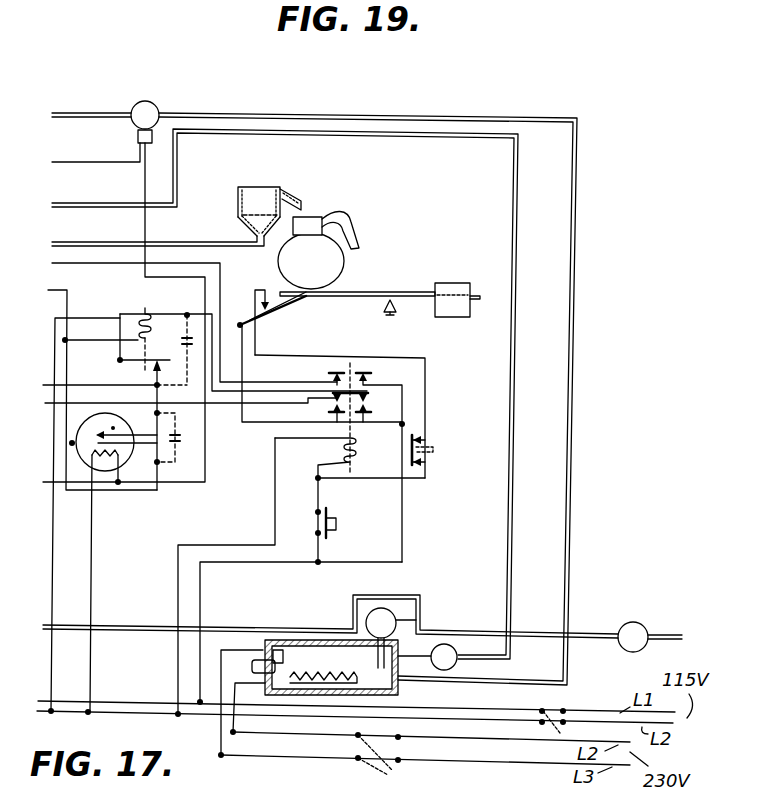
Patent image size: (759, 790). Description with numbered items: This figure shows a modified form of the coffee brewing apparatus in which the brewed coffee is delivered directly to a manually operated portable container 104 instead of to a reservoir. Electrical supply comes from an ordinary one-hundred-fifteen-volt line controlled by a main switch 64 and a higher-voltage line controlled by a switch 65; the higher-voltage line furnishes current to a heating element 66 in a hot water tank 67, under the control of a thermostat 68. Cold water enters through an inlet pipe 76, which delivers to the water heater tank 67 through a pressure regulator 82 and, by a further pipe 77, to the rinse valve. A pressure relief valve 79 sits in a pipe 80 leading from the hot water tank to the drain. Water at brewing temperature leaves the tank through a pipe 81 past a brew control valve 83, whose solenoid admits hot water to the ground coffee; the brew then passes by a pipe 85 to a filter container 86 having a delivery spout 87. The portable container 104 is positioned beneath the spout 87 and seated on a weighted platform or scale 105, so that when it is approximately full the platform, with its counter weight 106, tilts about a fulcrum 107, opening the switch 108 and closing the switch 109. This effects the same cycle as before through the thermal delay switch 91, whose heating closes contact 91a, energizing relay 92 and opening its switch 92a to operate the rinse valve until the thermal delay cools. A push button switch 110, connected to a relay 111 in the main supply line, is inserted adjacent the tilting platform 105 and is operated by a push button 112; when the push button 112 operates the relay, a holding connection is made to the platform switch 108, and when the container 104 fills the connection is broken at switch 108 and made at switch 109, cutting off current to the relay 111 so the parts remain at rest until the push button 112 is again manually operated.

The main switch 64 is at (557, 707).
The switch 65 is at (397, 767).
The heating element 66 is at (310, 673).
The hot water tank 67 is at (282, 634).
The thermostat 68 is at (278, 633).
The inlet pipe 76 is at (578, 632).
The pipe 77 is at (66, 624).
The pressure relief valve 79 is at (449, 644).
The pipe 80 is at (103, 203).
The pipe 81 is at (103, 112).
The pressure regulator 82 is at (386, 608).
The brew control valve 83 is at (158, 110).
The pipe 85 is at (102, 238).
The filter container 86 is at (237, 223).
The delivery spout 87 is at (297, 201).
The thermal delay switch 91 is at (73, 445).
The contact 91a is at (113, 428).
The relay 92 is at (138, 311).
The switch 92a is at (141, 361).
The portable container 104 is at (329, 268).
The weighted platform 105 is at (358, 297).
The counter weight 106 is at (462, 312).
The fulcrum 107 is at (397, 321).
The switch 108 is at (250, 313).
The switch 109 is at (267, 307).
The push button switch 110 is at (342, 497).
The relay 111 is at (330, 448).
The push button 112 is at (429, 441).